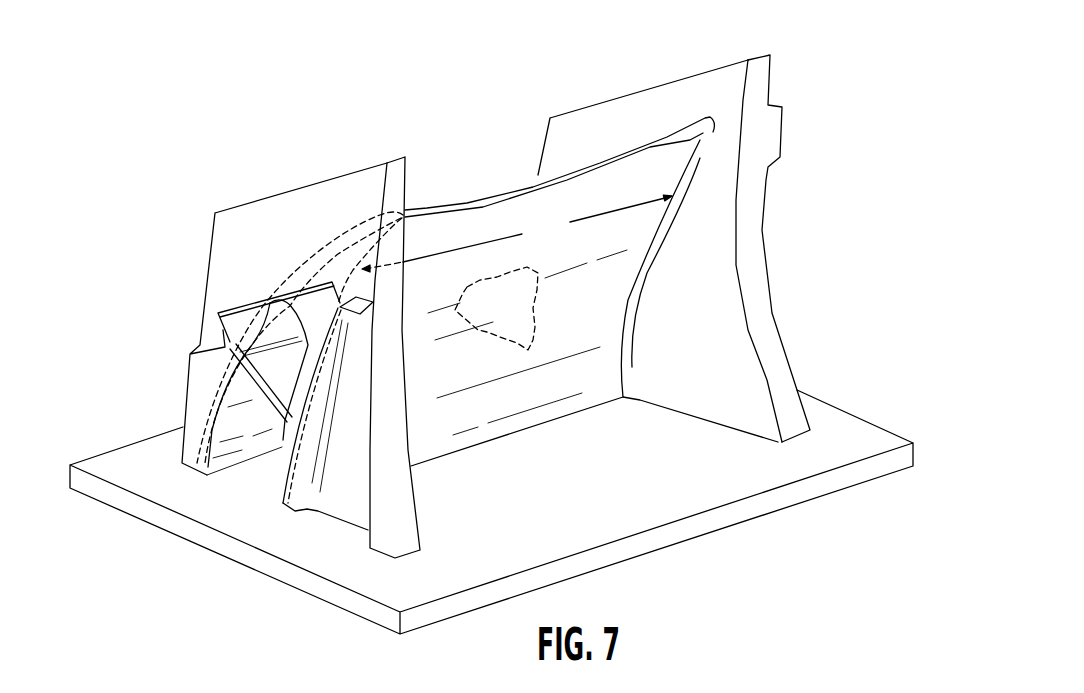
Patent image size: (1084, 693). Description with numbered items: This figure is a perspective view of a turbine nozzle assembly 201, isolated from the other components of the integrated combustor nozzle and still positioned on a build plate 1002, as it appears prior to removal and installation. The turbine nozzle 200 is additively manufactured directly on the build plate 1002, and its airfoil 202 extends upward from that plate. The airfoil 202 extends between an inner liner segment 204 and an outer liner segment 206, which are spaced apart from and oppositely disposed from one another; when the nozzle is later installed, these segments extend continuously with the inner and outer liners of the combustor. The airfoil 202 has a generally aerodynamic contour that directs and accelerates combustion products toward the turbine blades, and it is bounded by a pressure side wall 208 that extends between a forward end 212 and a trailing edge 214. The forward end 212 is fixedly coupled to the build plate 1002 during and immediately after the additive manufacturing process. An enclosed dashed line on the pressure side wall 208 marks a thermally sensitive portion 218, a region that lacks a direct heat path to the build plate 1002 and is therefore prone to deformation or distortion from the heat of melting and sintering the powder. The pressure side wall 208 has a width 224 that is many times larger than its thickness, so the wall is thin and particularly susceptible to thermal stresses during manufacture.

The turbine nozzle 200 is at (189, 118).
The turbine nozzle assembly 201 is at (276, 102).
The airfoil 202 is at (563, 288).
The inner liner segment 204 is at (230, 240).
The outer liner segment 206 is at (753, 311).
The pressure side wall 208 is at (482, 357).
The forward end 212 is at (468, 486).
The trailing edge 214 is at (483, 200).
The thermally sensitive portion 218 is at (516, 310).
The width 224 is at (434, 329).
The build plate 1002 is at (833, 433).